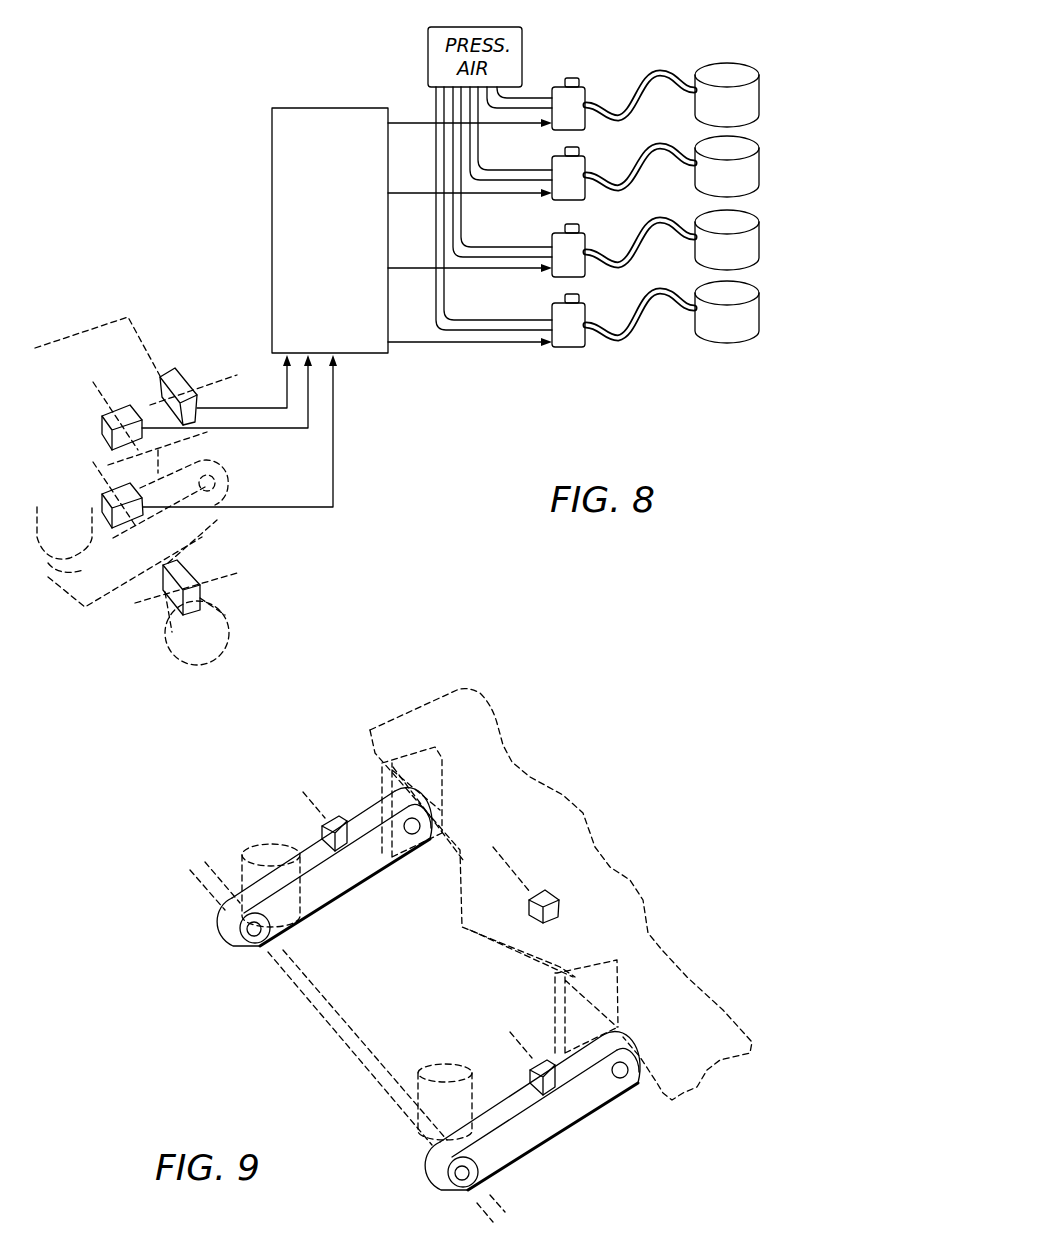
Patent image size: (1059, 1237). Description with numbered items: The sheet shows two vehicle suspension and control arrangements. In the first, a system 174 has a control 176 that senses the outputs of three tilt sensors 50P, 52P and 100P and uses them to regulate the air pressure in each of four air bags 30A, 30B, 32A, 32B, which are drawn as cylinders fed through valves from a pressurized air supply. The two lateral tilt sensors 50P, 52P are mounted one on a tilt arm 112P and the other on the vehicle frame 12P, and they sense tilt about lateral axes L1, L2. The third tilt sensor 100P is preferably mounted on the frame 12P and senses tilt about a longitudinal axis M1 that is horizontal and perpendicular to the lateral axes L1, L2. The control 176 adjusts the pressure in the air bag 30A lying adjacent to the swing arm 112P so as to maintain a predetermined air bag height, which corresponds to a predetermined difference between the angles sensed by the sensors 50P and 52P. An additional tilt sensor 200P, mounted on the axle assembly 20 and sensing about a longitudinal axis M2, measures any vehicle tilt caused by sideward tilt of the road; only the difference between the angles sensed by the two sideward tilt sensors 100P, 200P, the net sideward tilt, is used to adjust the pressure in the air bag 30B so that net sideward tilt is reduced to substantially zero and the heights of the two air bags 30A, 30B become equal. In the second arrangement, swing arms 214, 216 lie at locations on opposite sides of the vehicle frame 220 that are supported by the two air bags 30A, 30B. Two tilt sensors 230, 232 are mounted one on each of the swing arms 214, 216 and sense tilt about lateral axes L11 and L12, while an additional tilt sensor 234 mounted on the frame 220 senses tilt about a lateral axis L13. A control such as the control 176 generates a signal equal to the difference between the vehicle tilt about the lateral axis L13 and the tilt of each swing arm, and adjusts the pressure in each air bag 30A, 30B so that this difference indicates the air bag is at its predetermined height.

In FIG. 8, the system 174 is at (185, 166).
In FIG. 8, the control 176 is at (330, 108).
In FIG. 8, the air bag 30A is at (760, 95).
In FIG. 9, the air bag 30A is at (428, 1085).
In FIG. 8, the air bag 30B is at (760, 163).
In FIG. 9, the air bag 30B is at (240, 865).
In FIG. 8, the air bag 32A is at (760, 240).
In FIG. 8, the air bag 32B is at (760, 312).
In FIG. 8, the vehicle frame 12P is at (82, 332).
In FIG. 8, the tilt sensor 100P is at (163, 370).
In FIG. 8, the longitudinal axis M1 is at (213, 377).
In FIG. 8, the lateral axis L2 is at (93, 380).
In FIG. 8, the tilt sensor 52P is at (100, 423).
In FIG. 8, the lateral axis L1 is at (93, 460).
In FIG. 8, the tilt sensor 50P is at (102, 502).
In FIG. 8, the tilt arm 112P is at (223, 483).
In FIG. 8, the longitudinal axis M2 is at (230, 572).
In FIG. 8, the axle assembly 20 is at (225, 620).
In FIG. 8, the tilt sensor 200P is at (145, 618).
In FIG. 9, the vehicle frame 220 is at (497, 723).
In FIG. 9, the swing arm 216 is at (296, 826).
In FIG. 9, the tilt sensor 232 is at (340, 850).
In FIG. 9, the lateral axis L12 is at (318, 807).
In FIG. 9, the swing arm 214 is at (542, 1161).
In FIG. 9, the tilt sensor 230 is at (547, 1092).
In FIG. 9, the lateral axis L11 is at (512, 1034).
In FIG. 9, the tilt sensor 234 is at (560, 905).
In FIG. 9, the lateral axis L13 is at (497, 852).